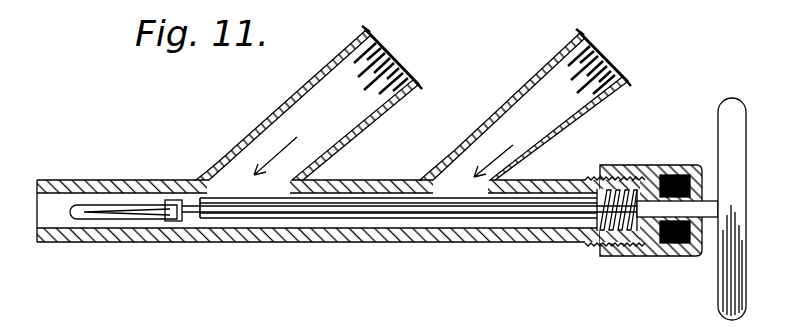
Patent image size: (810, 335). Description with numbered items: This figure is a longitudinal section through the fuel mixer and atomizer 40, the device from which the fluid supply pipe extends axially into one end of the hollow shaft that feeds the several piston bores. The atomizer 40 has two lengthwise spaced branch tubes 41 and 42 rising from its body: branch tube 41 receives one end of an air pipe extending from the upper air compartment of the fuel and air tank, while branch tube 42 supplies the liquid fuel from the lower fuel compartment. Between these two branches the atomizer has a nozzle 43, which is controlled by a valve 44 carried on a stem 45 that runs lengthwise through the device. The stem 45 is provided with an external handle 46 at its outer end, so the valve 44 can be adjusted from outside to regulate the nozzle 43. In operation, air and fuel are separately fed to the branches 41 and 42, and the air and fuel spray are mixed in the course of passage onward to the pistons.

The fuel mixer and atomizer 40 is at (352, 227).
The branch tube 41 is at (300, 121).
The branch tube 42 is at (523, 117).
The nozzle 43 is at (243, 219).
The valve 44 is at (160, 211).
The stem 45 is at (445, 213).
The external handle 46 is at (732, 157).